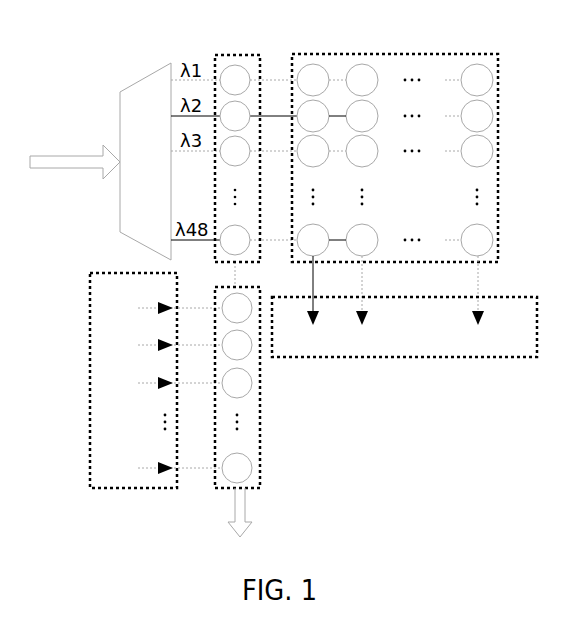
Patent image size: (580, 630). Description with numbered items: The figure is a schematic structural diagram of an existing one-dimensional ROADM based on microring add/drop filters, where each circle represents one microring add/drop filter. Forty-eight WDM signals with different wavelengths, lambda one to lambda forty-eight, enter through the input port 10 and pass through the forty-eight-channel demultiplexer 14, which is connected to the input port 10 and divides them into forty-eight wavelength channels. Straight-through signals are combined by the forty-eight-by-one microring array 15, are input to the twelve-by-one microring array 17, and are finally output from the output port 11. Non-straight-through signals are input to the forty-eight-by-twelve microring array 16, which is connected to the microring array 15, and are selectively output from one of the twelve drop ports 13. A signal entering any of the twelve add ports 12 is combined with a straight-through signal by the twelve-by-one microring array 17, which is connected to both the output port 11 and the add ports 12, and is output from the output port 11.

The input port 10 is at (57, 150).
The output port 11 is at (250, 515).
The add ports 12 is at (93, 273).
The drop ports 13 is at (500, 297).
The 48-channel demultiplexer 14 is at (155, 70).
The 48×1 microring array 15 is at (234, 52).
The 48×12 microring array 16 is at (397, 52).
The 12×1 microring array 17 is at (262, 421).